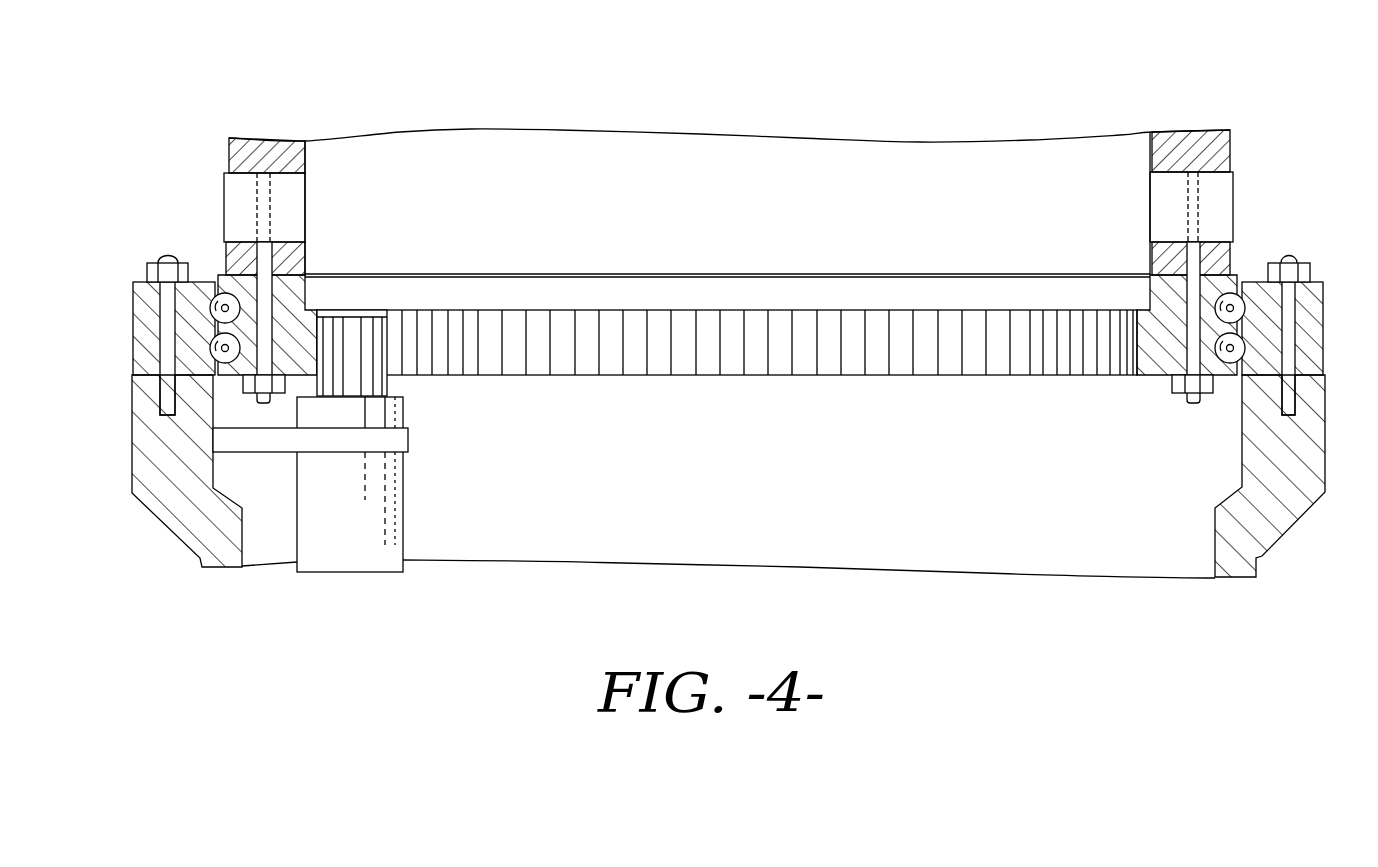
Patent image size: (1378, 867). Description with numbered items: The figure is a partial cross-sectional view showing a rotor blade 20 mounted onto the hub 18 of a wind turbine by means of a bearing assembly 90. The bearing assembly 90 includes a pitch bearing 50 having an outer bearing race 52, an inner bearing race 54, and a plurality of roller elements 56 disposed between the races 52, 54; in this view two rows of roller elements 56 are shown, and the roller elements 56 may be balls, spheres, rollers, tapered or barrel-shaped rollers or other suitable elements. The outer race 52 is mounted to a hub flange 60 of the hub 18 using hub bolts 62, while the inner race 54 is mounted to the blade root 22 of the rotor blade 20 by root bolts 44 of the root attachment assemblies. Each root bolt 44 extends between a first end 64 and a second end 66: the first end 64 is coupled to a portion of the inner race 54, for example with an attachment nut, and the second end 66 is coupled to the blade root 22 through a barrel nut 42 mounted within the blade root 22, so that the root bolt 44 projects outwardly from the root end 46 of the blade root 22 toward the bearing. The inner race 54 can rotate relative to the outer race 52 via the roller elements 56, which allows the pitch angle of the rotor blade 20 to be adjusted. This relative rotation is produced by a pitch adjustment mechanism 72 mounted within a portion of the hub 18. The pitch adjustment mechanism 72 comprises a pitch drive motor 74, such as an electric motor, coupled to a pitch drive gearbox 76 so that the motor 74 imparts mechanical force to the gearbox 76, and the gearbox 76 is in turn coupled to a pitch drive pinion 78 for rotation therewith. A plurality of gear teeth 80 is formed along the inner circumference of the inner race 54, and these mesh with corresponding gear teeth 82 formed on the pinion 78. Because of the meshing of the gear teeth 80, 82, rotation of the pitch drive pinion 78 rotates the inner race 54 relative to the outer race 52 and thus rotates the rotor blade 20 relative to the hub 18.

The hub 18 is at (180, 542).
The rotor blade 20 is at (922, 142).
The blade root 22 is at (1212, 143).
The barrel nut 42 is at (224, 188).
The root bolt 44 is at (263, 262).
The root end 46 is at (588, 284).
The pitch bearing 50 is at (1000, 376).
The outer bearing race 52 is at (1303, 298).
The inner bearing race 54 is at (1160, 357).
The roller elements 56 is at (227, 362).
The hub flange 60 is at (142, 450).
The hub bolts 62 is at (167, 300).
The first end 64 is at (260, 398).
The second end 66 is at (270, 207).
The pitch adjustment mechanism 72 is at (410, 533).
The pitch drive motor 74 is at (348, 547).
The pitch drive gearbox 76 is at (405, 417).
The pitch drive pinion 78 is at (390, 383).
The gear teeth 80 is at (650, 348).
The gear teeth 82 is at (377, 355).
The bearing assembly 90 is at (157, 192).